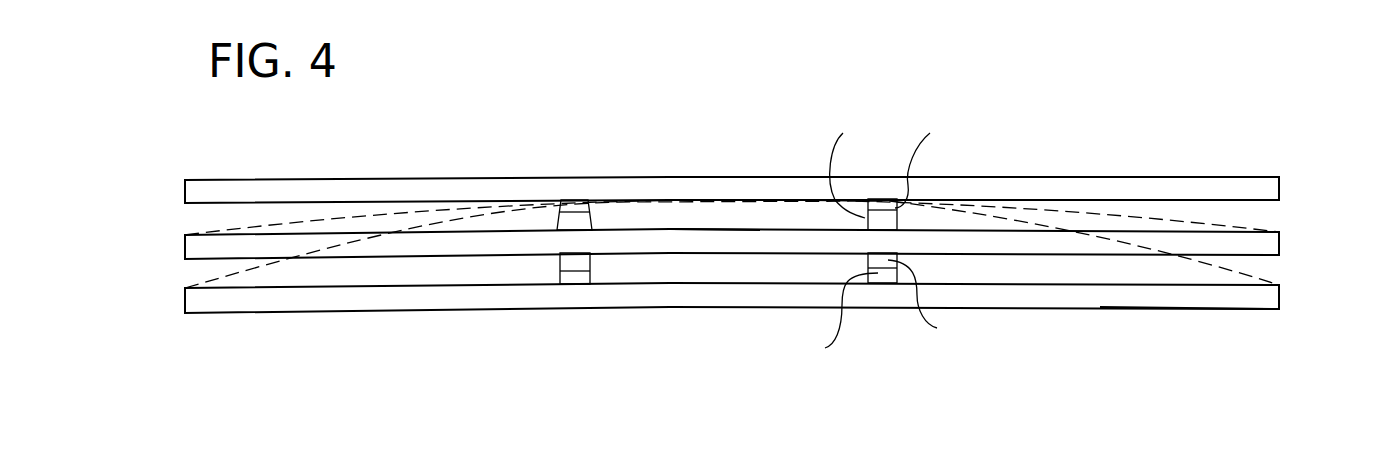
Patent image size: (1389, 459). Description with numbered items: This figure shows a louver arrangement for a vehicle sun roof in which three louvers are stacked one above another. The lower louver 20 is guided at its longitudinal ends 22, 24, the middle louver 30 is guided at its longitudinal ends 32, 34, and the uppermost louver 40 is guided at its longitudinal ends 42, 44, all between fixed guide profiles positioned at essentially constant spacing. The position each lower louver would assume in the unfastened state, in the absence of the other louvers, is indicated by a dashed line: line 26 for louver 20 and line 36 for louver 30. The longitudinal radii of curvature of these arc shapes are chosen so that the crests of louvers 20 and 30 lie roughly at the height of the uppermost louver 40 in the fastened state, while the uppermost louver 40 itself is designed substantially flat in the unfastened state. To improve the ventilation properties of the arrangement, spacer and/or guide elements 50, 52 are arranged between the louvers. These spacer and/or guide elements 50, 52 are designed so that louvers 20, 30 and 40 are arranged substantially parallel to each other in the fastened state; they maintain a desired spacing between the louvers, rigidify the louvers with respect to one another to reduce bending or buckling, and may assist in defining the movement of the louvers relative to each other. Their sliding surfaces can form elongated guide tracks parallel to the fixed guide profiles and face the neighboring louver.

The louver 20 is at (1183, 295).
The longitudinal end of louver 22 is at (176, 302).
The longitudinal end of louver 24 is at (1296, 297).
The dashed line 26 is at (1197, 262).
The louver 30 is at (752, 240).
The longitudinal end of louver 32 is at (176, 247).
The longitudinal end of louver 34 is at (1292, 244).
The dashed line 36 is at (1020, 208).
The uppermost louver 40 is at (697, 188).
The longitudinal end of louver 42 is at (180, 184).
The longitudinal end of louver 44 is at (1296, 186).
The spacer and/or guide element 50 is at (552, 210).
The spacer and/or guide element 52 is at (600, 210).